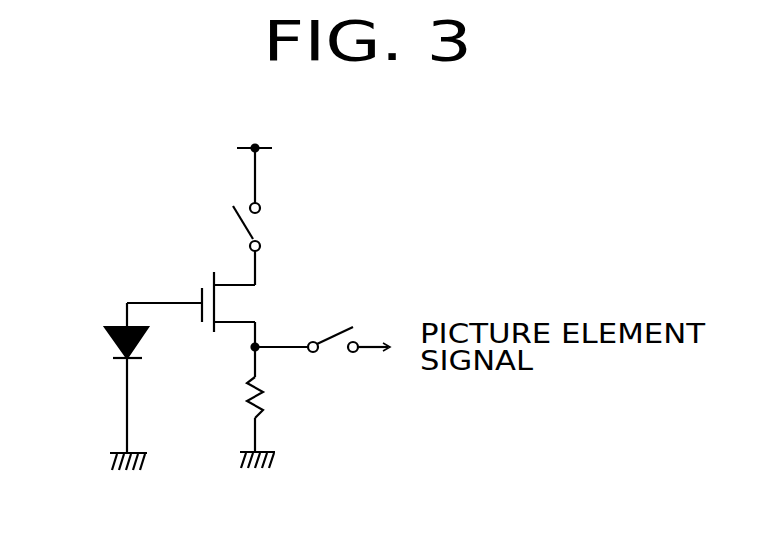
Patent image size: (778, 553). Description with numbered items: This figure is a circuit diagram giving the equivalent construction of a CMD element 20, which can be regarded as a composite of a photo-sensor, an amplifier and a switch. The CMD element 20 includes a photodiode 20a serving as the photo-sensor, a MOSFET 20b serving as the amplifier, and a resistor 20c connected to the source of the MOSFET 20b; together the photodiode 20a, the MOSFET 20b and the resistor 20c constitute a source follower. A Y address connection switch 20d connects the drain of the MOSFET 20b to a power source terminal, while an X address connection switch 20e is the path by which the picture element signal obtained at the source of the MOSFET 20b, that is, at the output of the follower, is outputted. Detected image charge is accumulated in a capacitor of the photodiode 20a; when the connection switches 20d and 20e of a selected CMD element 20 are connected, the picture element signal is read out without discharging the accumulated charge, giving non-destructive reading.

The CMD element 20 is at (378, 508).
The photodiode 20a is at (112, 333).
The MOSFET 20b is at (212, 328).
The resistor 20c is at (262, 400).
The Y address connection switch 20d is at (258, 227).
The X address connection switch 20e is at (338, 330).